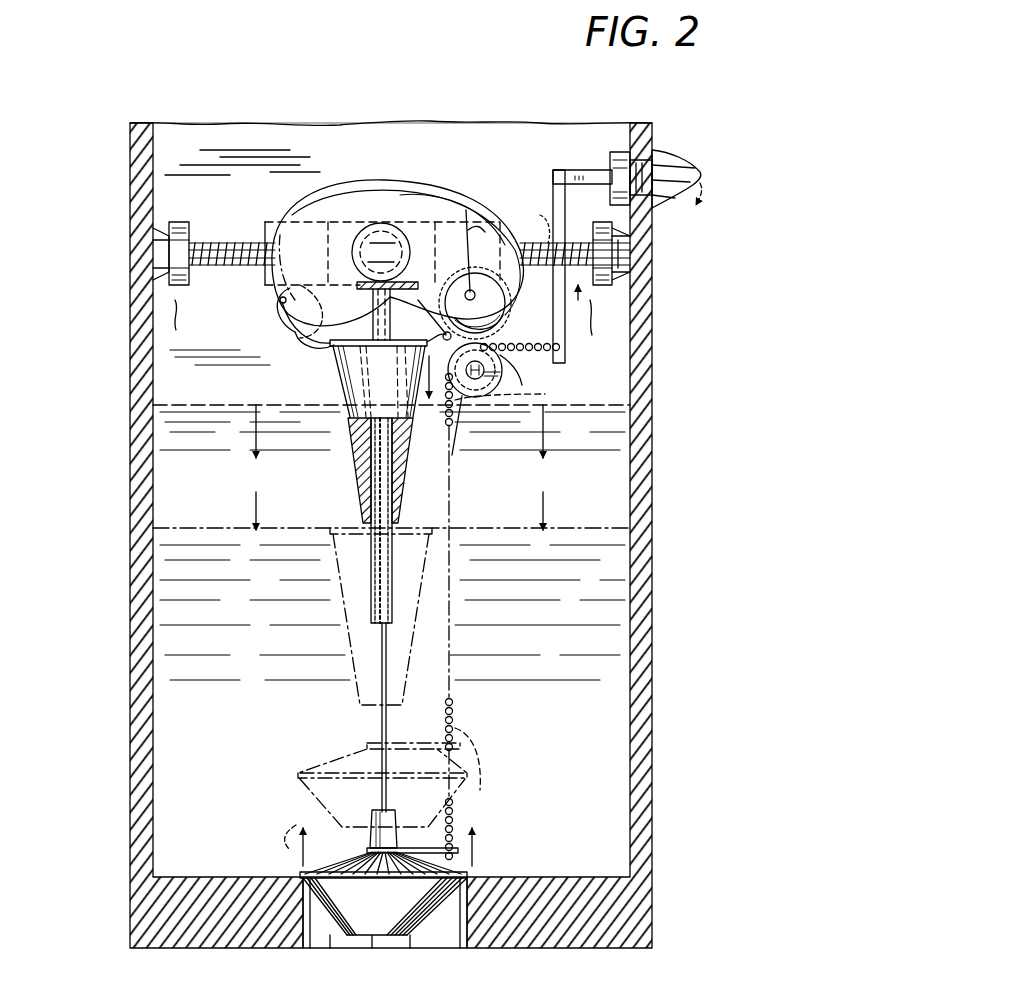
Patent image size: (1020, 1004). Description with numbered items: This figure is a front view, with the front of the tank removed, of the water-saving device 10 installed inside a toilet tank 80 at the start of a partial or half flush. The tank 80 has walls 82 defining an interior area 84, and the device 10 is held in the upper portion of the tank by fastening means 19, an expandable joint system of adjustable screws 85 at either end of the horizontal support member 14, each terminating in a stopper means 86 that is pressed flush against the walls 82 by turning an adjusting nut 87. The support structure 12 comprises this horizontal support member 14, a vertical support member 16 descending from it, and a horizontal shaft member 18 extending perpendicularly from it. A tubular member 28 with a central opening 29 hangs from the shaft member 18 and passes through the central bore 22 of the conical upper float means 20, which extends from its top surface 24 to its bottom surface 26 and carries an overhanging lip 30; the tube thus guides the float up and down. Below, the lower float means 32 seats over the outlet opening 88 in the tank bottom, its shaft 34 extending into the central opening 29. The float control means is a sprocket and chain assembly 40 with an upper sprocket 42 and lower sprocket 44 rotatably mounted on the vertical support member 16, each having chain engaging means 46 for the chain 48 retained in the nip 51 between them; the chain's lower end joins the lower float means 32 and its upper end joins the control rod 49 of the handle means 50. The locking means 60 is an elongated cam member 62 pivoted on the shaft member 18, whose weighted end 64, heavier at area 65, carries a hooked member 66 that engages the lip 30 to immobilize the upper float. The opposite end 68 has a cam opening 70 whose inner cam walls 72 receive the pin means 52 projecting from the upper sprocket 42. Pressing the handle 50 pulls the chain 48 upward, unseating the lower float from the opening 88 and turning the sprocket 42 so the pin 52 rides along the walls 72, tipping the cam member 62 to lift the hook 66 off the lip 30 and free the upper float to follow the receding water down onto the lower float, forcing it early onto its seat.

The water-saving device 10 is at (210, 118).
The support structure 12 is at (492, 235).
The horizontal support member 14 is at (276, 233).
The vertical support member 16 is at (522, 378).
The horizontal shaft member 18 is at (382, 243).
The fastening means 19 is at (383, 333).
The upper float means 20 is at (350, 388).
The central bore 22 is at (371, 462).
The top surface 24 is at (430, 335).
The bottom surface 26 is at (368, 528).
The tubular member 28 is at (372, 304).
The central opening 29 is at (378, 495).
The overhanging ledge or lip 30 is at (352, 366).
The lower float means 32 is at (300, 858).
The shaft 34 is at (380, 670).
The sprocket and chain assembly 40 is at (485, 397).
The upper sprocket 42 is at (433, 324).
The lower sprocket 44 is at (466, 400).
The chain engaging means 46 is at (515, 393).
The chain 48 is at (535, 338).
The control rod 49 is at (576, 170).
The handle means 50 is at (682, 182).
The nip 51 is at (435, 372).
The pin means 52 is at (467, 292).
The locking means 60 is at (405, 177).
The cam member 62 is at (330, 225).
The end of cam member 64 is at (282, 326).
The weighted area 65 is at (278, 298).
The hooked member 66 is at (302, 350).
The end of cam member 68 is at (490, 236).
The cam opening 70 is at (484, 290).
The inner cam walls 72 is at (473, 235).
The toilet tank 80 is at (652, 470).
The walls 82 is at (150, 508).
The interior area 84 is at (150, 474).
The adjustable screws 85 is at (220, 242).
The stopper means 86 is at (160, 256).
The adjusting nut 87 is at (178, 232).
The outlet opening 88 is at (437, 940).